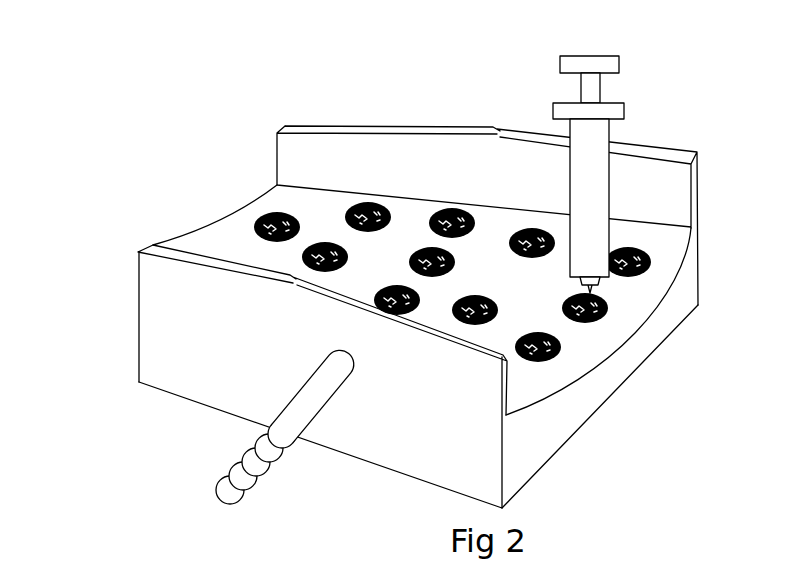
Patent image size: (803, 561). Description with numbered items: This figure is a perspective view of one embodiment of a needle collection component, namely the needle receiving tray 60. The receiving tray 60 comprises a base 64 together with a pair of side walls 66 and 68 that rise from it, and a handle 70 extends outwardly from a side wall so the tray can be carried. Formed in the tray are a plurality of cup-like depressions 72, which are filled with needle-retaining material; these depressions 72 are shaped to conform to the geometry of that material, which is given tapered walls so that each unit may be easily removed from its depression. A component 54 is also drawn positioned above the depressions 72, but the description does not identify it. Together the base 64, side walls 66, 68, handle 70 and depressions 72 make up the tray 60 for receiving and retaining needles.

The dispenser syringe 54 is at (578, 286).
The needle receiving tray 60 is at (137, 333).
The base 64 is at (508, 468).
The side wall 66 is at (217, 368).
The side wall 68 is at (423, 128).
The handle 70 is at (302, 417).
The cup-like depressions 72 is at (560, 353).